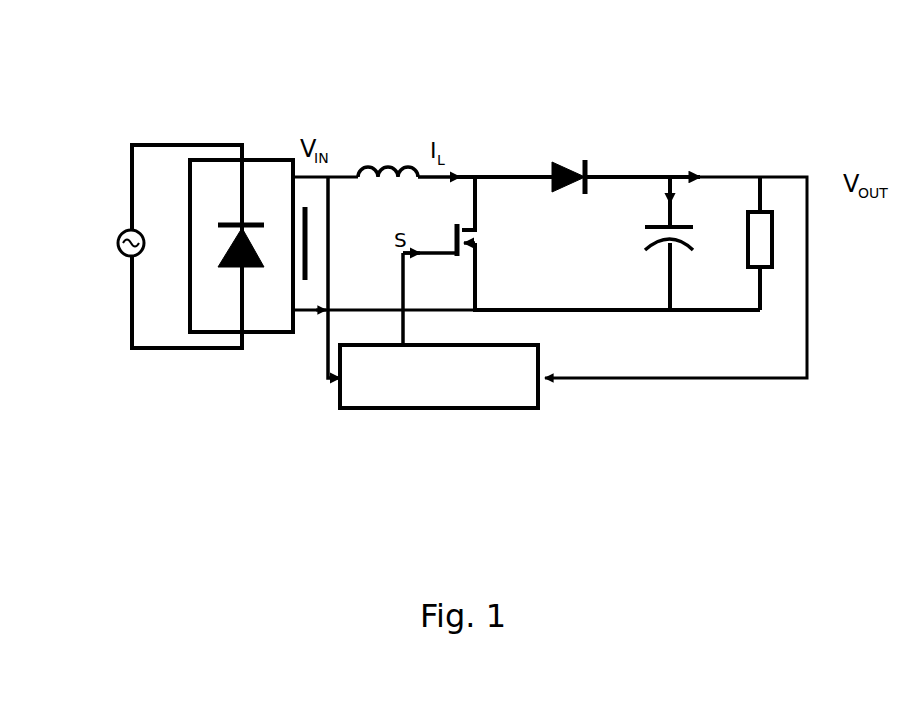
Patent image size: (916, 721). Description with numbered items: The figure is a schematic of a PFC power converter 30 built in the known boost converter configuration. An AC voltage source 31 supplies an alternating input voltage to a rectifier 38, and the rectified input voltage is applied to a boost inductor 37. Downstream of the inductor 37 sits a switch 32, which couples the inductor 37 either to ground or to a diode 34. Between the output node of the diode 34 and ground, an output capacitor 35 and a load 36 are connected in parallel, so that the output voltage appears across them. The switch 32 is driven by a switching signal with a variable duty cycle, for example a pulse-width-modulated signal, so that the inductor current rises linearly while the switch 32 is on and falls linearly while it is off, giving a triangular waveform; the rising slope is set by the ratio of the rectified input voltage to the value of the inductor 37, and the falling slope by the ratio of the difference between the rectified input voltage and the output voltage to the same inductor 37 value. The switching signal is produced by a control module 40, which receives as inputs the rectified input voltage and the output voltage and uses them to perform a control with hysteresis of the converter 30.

The PFC power converter 30 is at (200, 116).
The AC voltage source 31 is at (98, 248).
The rectifier 38 is at (264, 172).
The boost inductor 37 is at (392, 166).
The switch 32 is at (467, 244).
The diode 34 is at (568, 162).
The output capacitor 35 is at (672, 177).
The load 36 is at (760, 208).
The control module 40 is at (478, 391).